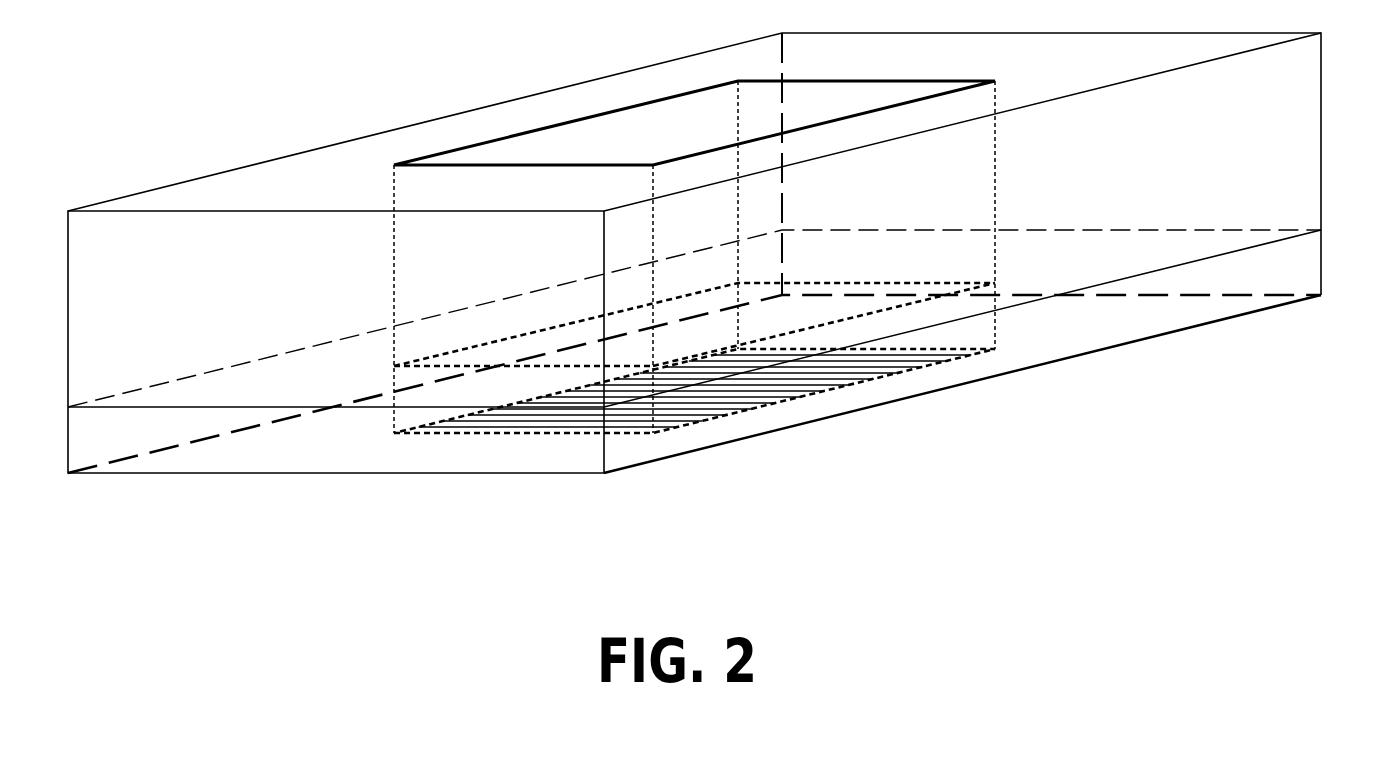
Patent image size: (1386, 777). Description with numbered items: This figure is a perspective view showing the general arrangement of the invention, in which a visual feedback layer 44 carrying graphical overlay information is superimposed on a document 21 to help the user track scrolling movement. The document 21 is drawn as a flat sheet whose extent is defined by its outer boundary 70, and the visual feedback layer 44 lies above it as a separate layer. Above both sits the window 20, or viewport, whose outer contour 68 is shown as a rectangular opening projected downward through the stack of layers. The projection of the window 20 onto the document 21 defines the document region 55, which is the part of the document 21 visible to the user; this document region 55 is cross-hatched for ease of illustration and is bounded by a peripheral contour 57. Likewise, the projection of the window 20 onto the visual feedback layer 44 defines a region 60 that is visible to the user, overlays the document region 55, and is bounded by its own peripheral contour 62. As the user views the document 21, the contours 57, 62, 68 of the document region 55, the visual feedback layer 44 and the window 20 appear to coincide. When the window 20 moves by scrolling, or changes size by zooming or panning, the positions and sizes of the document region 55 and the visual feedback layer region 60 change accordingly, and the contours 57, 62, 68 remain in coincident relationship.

The window 20 is at (621, 125).
The document 21 is at (1233, 307).
The visual feedback layer 44 is at (1235, 238).
The document region 55 is at (943, 353).
The peripheral contour 57 is at (875, 377).
The visual feedback layer region 60 is at (937, 285).
The peripheral contour 62 is at (817, 280).
The outer contour 68 is at (492, 140).
The outer boundary 70 is at (1088, 353).